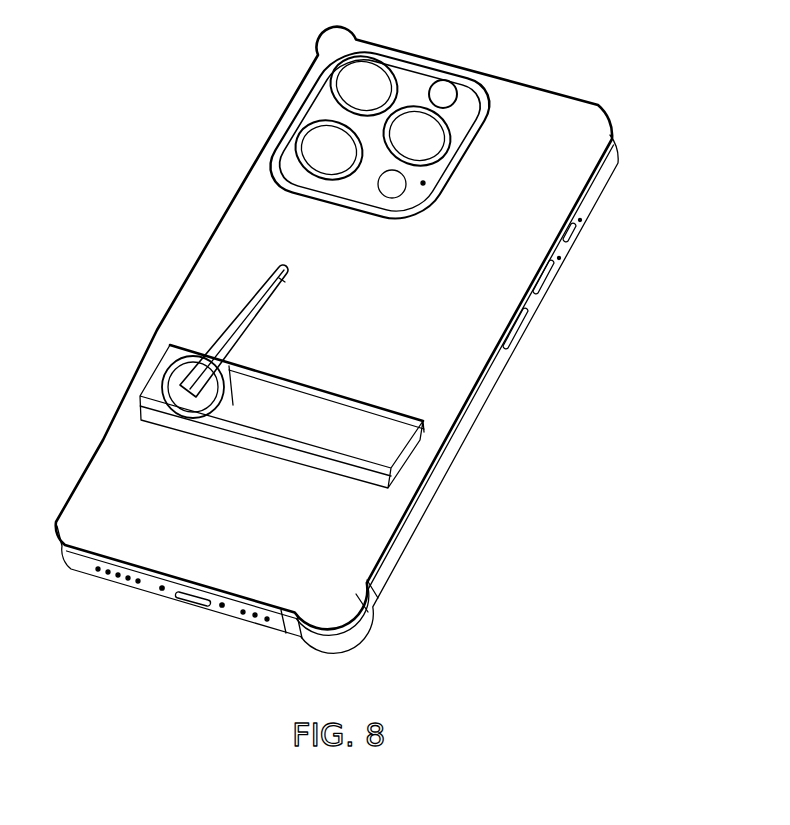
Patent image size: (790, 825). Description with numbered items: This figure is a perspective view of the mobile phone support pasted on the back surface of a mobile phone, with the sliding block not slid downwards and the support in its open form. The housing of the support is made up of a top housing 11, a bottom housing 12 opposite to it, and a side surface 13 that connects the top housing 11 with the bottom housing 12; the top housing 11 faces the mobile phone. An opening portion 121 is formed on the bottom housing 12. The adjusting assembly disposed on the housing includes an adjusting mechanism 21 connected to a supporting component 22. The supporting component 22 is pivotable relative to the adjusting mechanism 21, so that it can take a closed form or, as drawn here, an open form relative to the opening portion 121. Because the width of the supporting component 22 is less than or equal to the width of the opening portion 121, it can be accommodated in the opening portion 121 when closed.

The top housing 11 is at (135, 410).
The bottom housing 12 is at (437, 449).
The opening portion 121 is at (287, 412).
The side surface 13 is at (238, 440).
The adjusting mechanism 21 is at (178, 376).
The supporting component 22 is at (232, 328).